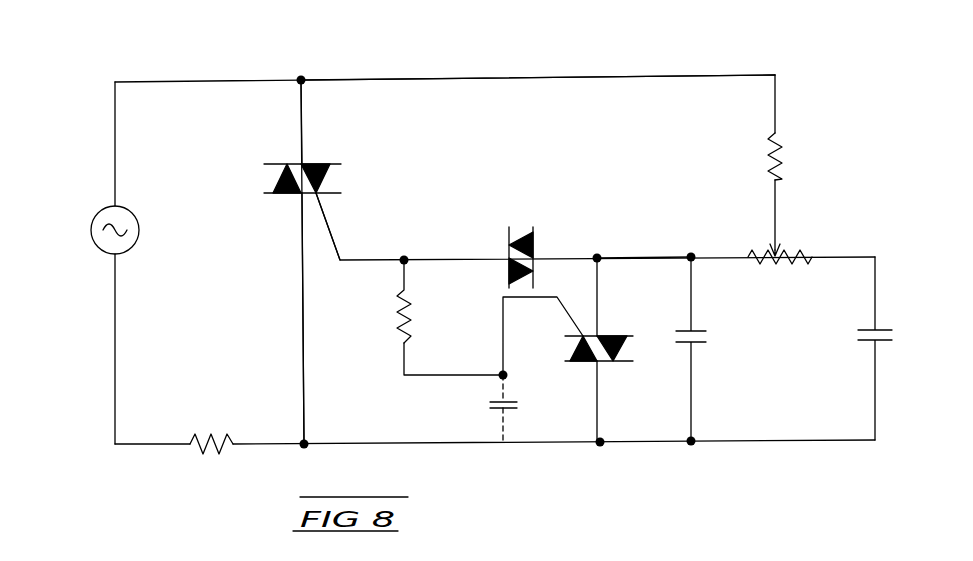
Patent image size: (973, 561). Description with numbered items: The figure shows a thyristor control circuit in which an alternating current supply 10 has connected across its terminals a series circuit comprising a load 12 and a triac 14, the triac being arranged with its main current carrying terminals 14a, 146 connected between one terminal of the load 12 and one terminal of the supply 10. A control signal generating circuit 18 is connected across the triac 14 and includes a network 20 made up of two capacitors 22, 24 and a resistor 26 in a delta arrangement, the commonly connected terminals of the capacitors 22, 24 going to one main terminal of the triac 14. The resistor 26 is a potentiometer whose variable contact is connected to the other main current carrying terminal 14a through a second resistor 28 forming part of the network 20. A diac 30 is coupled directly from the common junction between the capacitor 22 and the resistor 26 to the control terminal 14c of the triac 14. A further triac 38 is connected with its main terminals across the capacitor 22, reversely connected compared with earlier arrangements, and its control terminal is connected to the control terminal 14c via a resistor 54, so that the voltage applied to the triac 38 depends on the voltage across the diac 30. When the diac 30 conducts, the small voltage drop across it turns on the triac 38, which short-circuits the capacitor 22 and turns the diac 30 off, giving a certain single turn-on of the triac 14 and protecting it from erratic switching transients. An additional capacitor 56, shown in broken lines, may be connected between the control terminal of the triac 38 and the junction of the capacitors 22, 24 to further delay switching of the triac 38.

The alternating current supply 10 is at (131, 212).
The load 12 is at (228, 438).
The triac 14 is at (343, 177).
The main current carrying terminal 14a is at (302, 125).
The control terminal 14c is at (335, 238).
The triac second main terminal 146 is at (304, 318).
The control signal generating circuit 18 is at (620, 63).
The network 20 is at (643, 282).
The capacitor 22 is at (700, 343).
The capacitor 24 is at (880, 347).
The resistor 26 is at (792, 250).
The second resistor 28 is at (785, 172).
The diac 30 is at (533, 247).
The further triac 38 is at (623, 347).
The resistor 54 is at (400, 312).
The additional capacitor 56 is at (507, 410).